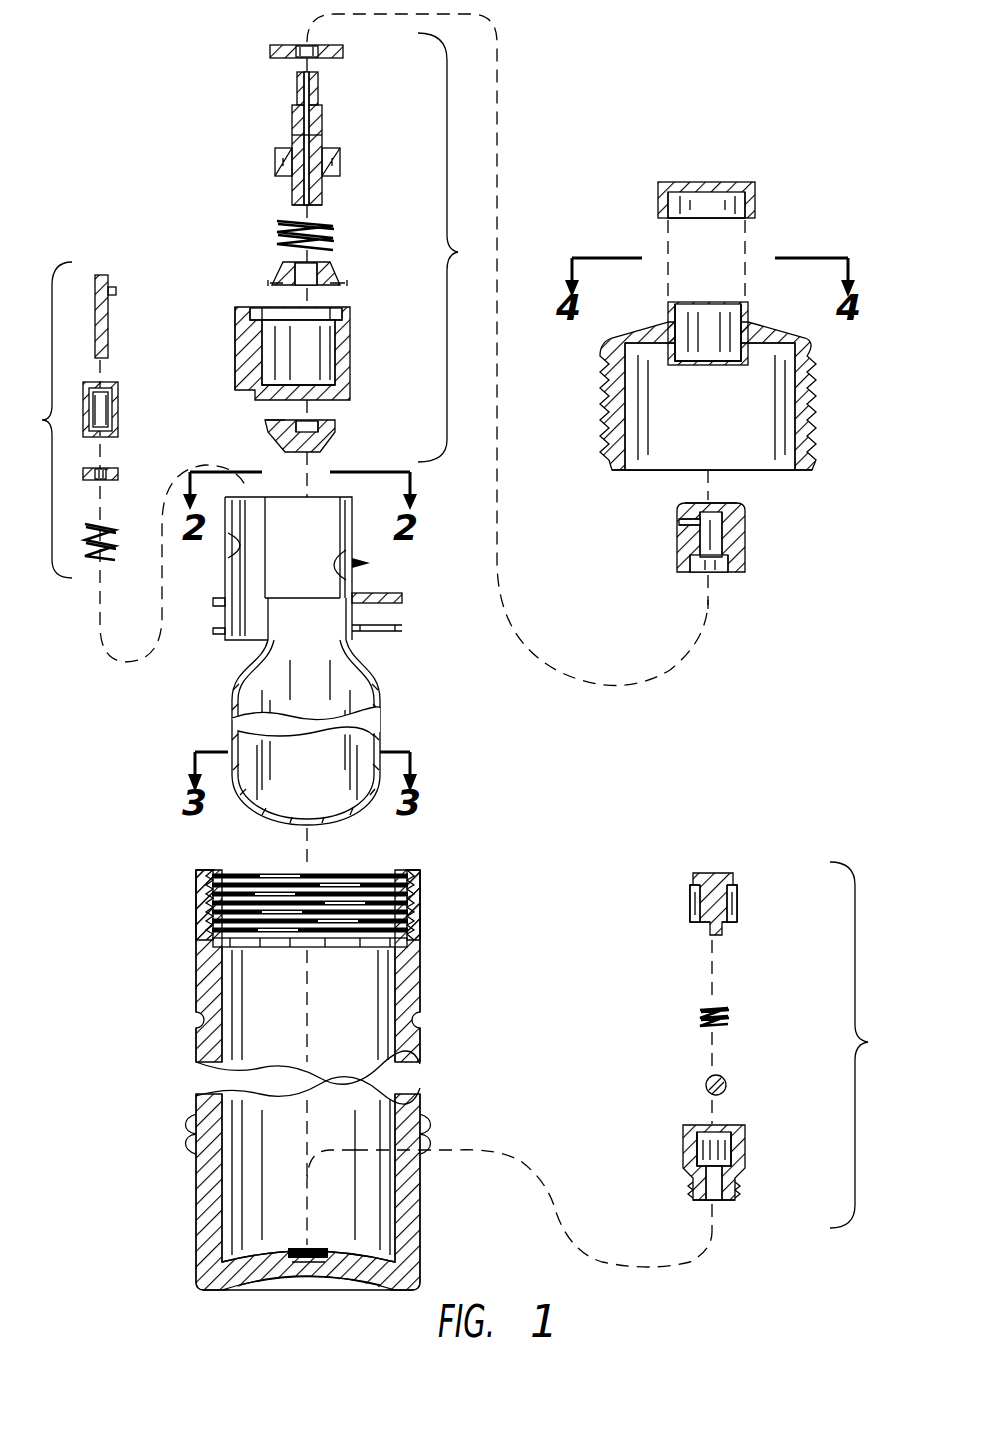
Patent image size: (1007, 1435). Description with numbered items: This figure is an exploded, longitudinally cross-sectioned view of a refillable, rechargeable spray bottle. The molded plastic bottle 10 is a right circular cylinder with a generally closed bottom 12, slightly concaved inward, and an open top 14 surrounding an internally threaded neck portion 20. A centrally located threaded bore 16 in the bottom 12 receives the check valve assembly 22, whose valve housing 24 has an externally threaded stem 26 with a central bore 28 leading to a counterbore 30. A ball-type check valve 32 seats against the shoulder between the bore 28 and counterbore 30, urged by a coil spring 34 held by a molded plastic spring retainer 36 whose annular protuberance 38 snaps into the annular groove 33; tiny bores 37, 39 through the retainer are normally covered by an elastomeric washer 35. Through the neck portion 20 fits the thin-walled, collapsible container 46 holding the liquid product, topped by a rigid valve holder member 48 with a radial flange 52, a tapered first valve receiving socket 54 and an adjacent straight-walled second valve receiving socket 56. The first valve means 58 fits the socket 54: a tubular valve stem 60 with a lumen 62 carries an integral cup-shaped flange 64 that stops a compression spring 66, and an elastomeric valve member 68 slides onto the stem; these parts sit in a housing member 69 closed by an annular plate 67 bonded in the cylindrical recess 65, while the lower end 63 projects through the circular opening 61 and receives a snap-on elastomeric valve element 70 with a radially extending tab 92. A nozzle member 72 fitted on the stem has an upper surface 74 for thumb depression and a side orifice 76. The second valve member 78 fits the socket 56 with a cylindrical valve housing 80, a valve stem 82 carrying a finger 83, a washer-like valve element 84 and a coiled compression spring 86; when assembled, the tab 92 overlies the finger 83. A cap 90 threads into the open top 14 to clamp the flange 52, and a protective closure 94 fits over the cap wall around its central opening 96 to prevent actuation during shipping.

The bottle 10 is at (196, 1198).
The bottom 12 is at (263, 1285).
The open top 14 is at (362, 878).
The threaded bore 16 is at (312, 1266).
The threaded neck portion 20 is at (242, 878).
The check valve assembly 22 is at (868, 1045).
The valve housing 24 is at (683, 1150).
The externally threaded stem 26 is at (740, 1184).
The central bore 28 is at (710, 1202).
The counterbore 30 is at (704, 1128).
The ball-type check valve 32 is at (727, 1083).
The annular groove 33 is at (728, 1132).
The coil spring 34 is at (730, 1022).
The elastomeric washer 35 is at (694, 892).
The spring retainer 36 is at (692, 920).
The tiny bore 37 is at (730, 935).
The annular protuberance 38 is at (738, 914).
The tiny bore 39 is at (698, 935).
The container 46 is at (380, 736).
The valve holder member 48 is at (370, 563).
The flange 52 is at (215, 604).
The first valve receiving socket 54 is at (352, 576).
The second valve receiving socket 56 is at (236, 560).
The first valve means 58 is at (452, 247).
The valve stem 60 is at (296, 122).
The circular opening 61 is at (300, 392).
The lumen 62 is at (294, 135).
The lower end 63 is at (318, 205).
The cup-shaped flange 64 is at (341, 166).
The cylindrical recess 65 is at (318, 312).
The compression spring 66 is at (278, 237).
The annular plate 67 is at (270, 50).
The elastomeric valve member 68 is at (283, 270).
The housing member 69 is at (236, 322).
The elastomeric valve element 70 is at (333, 445).
The nozzle member 72 is at (746, 540).
The upper surface 74 is at (727, 505).
The orifice 76 is at (682, 524).
The second valve member 78 is at (126, 462).
The valve housing 80 is at (118, 388).
The valve stem 82 is at (108, 322).
The finger 83 is at (116, 291).
The washer-like valve element 84 is at (112, 470).
The coiled compression spring 86 is at (106, 540).
The cap 90 is at (100, 392).
The radially extending tab 92 is at (268, 426).
The protective closure 94 is at (730, 182).
The central opening 96 is at (720, 320).